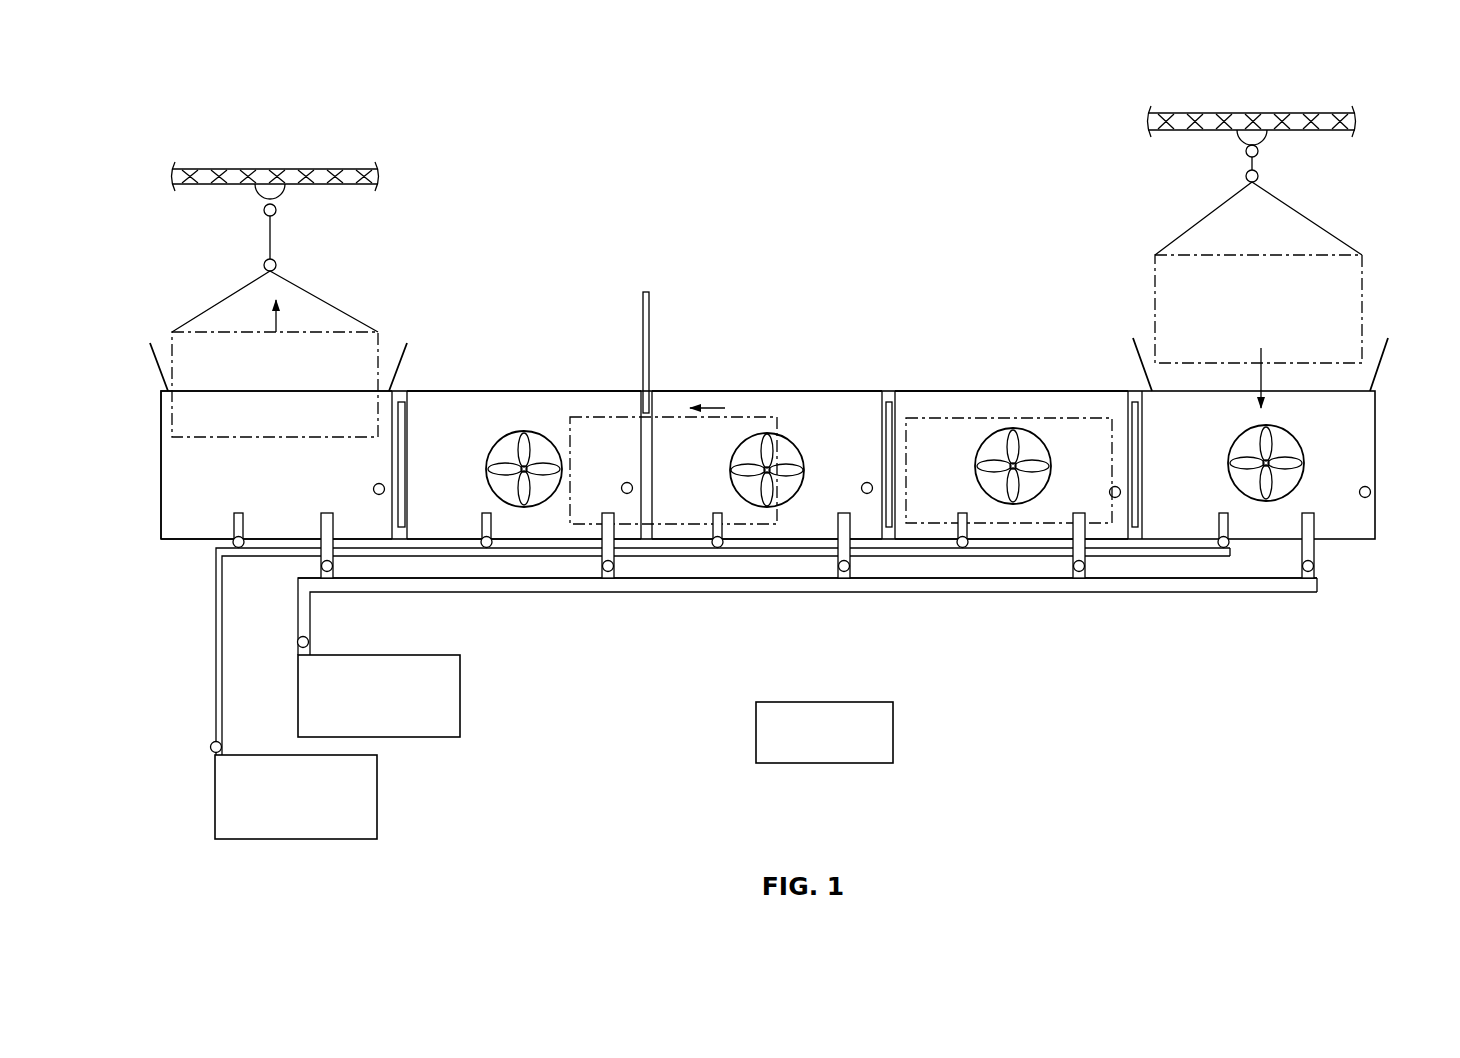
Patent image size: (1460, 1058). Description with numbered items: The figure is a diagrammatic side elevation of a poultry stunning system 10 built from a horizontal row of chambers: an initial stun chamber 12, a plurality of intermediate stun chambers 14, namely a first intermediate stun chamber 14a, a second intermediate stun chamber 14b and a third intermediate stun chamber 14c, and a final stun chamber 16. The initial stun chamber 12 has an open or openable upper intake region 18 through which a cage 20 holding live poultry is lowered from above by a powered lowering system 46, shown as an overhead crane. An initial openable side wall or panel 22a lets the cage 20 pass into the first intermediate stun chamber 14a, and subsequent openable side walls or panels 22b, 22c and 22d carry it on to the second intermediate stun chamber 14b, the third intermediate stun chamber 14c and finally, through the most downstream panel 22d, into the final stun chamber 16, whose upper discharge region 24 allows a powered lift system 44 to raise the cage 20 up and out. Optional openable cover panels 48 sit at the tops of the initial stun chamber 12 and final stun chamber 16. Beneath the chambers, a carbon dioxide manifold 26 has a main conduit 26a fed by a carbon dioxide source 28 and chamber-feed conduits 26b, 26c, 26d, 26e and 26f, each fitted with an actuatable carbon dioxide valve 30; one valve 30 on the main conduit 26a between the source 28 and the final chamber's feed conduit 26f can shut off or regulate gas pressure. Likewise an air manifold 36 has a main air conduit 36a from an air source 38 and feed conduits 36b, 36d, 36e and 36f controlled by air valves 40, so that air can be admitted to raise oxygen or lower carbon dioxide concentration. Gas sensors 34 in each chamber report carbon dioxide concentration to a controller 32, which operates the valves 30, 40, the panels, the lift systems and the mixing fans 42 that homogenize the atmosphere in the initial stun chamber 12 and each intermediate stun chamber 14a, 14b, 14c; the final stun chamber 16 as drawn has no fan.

The poultry stunning system 10 is at (873, 166).
The initial stun chamber 12 is at (1375, 428).
The intermediate stun chambers 14 is at (605, 268).
The first intermediate stun chamber 14a is at (1107, 400).
The second intermediate stun chamber 14b is at (858, 398).
The third intermediate stun chamber 14c is at (530, 400).
The final stun chamber 16 is at (160, 462).
The upper intake region 18 is at (1373, 345).
The cage 20 is at (215, 325).
The initial openable side wall or panel 22a is at (1142, 433).
The intermediate openable side wall or panel 22b is at (890, 395).
The intermediate openable side wall or panel 22c is at (650, 340).
The most downstream intermediate openable side wall or panel 22d is at (397, 427).
The upper discharge region 24 is at (340, 345).
The carbon dioxide manifold 26 is at (682, 612).
The main carbon dioxide conduit 26a is at (298, 628).
The chamber-feed conduit 26b is at (1308, 513).
The chamber-feed conduit 26c is at (1079, 513).
The chamber-feed conduit 26d is at (844, 513).
The chamber-feed conduit 26e is at (608, 513).
The final stun chamber's feed conduit 26f is at (327, 513).
The carbon dioxide source 28 is at (460, 697).
The carbon dioxide valves 30 is at (328, 578).
The controller 32 is at (756, 732).
The gas sensors 34 is at (376, 493).
The air manifold 36 is at (962, 513).
The main air conduit 36a is at (460, 550).
The air chamber-feed conduit 36b is at (1223, 513).
The air chamber-feed conduit 36d is at (717, 513).
The air chamber-feed conduit 36e is at (486, 513).
The final stun chamber's air feed conduit 36f is at (240, 513).
The air source 38 is at (377, 800).
The air valves 40 is at (236, 540).
The mixing fan 42 is at (505, 437).
The powered lift system 44 is at (378, 225).
The powered lowering system 46 is at (1123, 150).
The openable cover panels 48 is at (152, 360).